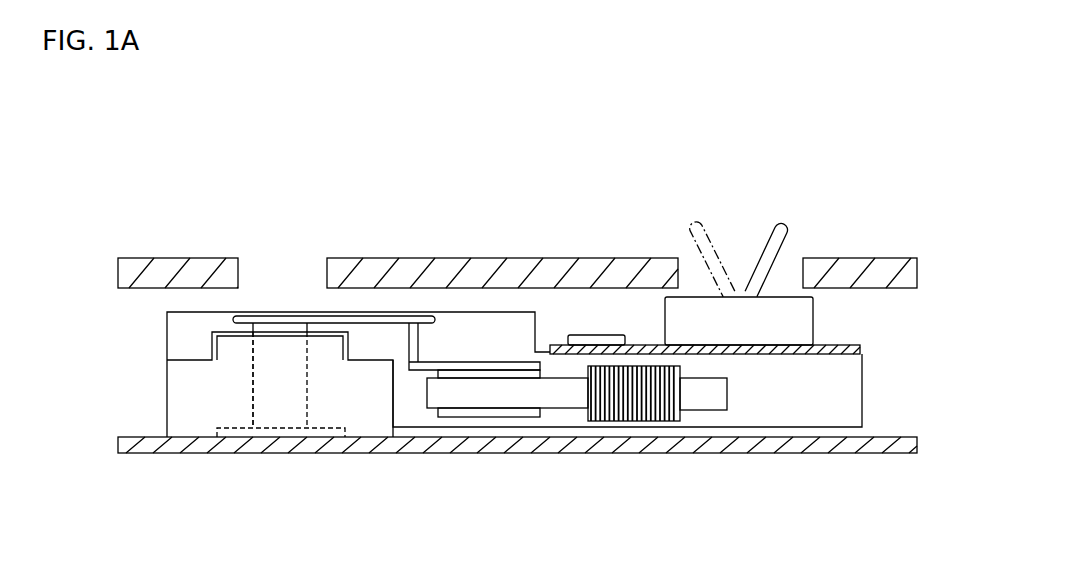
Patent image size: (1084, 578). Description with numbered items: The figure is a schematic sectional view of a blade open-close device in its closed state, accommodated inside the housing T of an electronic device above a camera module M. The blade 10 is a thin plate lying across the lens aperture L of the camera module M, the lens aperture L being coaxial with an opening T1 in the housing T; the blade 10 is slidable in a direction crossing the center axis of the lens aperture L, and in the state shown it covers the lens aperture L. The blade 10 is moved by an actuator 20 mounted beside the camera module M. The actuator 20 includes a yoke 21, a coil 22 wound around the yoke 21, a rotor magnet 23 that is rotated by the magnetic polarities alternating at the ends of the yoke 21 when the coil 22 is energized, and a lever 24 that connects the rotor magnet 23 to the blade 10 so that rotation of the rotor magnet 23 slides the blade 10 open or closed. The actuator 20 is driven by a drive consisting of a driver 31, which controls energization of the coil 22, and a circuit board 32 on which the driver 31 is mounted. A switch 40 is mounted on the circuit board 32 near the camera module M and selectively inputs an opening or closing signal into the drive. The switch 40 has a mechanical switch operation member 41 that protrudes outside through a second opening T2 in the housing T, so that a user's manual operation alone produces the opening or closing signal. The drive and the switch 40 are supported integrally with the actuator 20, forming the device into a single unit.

The blade 10 is at (311, 312).
The lens aperture L is at (253, 363).
The housing T is at (436, 258).
The opening T1 is at (243, 268).
The opening T2 is at (805, 268).
The actuator 20 is at (572, 429).
The yoke 21 is at (718, 411).
The coil 22 is at (643, 422).
The rotor magnet 23 is at (443, 417).
The lever 24 is at (408, 345).
The driver 31 is at (593, 335).
The circuit board 32 is at (855, 344).
The switch 40 is at (813, 316).
The mechanical switch operation member 41 is at (772, 245).
The camera module M is at (236, 468).